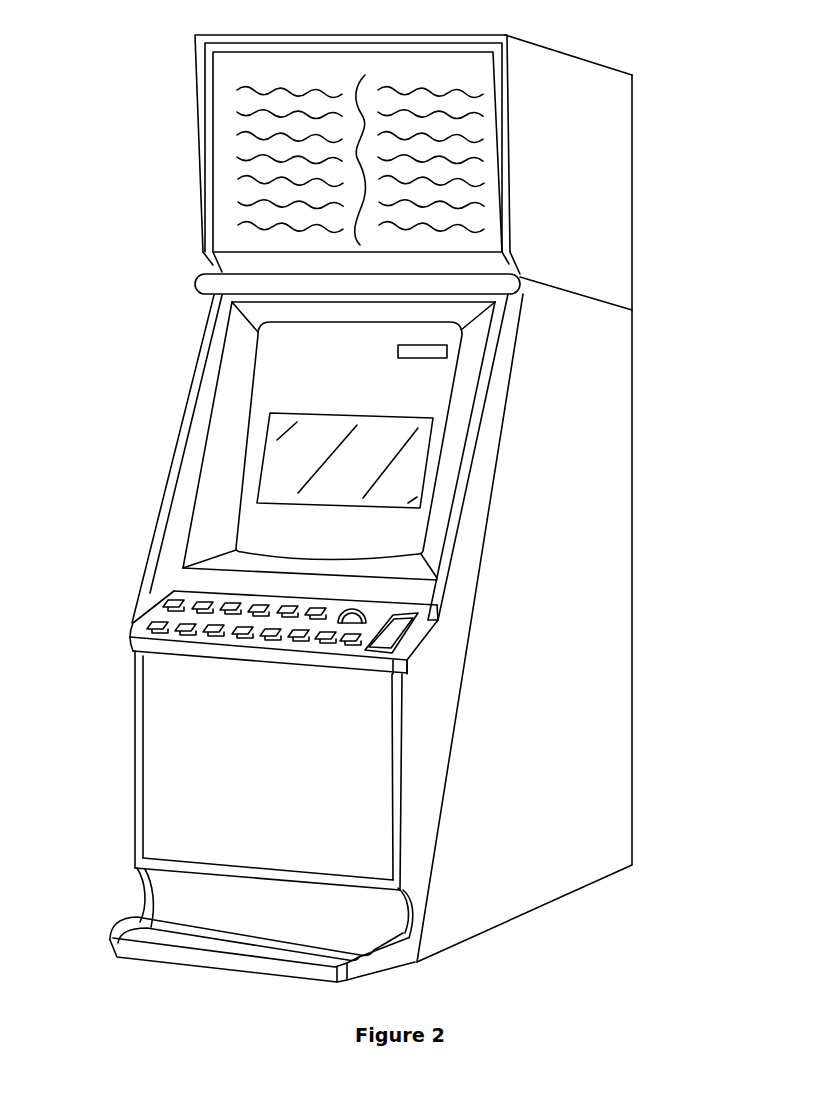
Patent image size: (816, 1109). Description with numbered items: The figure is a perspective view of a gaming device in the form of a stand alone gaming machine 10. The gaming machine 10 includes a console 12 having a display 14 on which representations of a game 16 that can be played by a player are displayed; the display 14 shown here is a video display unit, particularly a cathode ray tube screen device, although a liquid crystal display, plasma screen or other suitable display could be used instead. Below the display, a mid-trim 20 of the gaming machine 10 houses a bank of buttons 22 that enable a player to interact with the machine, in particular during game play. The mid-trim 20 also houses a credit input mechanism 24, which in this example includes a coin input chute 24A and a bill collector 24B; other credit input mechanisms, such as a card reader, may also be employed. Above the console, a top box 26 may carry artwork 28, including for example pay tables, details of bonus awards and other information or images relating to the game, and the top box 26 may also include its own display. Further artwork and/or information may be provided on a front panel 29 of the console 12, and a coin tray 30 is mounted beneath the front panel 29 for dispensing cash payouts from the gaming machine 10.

The gaming machine 10 is at (608, 47).
The console 12 is at (603, 473).
The display 14 is at (237, 517).
The game 16 is at (258, 465).
The mid-trim 20 is at (130, 640).
The bank of buttons 22 is at (204, 641).
The credit input mechanism 24 is at (389, 598).
The coin input chute 24A is at (367, 608).
The bill collector 24B is at (382, 643).
The top box 26 is at (198, 186).
The artwork 28 is at (245, 95).
The front panel 29 is at (168, 806).
The coin tray 30 is at (113, 956).